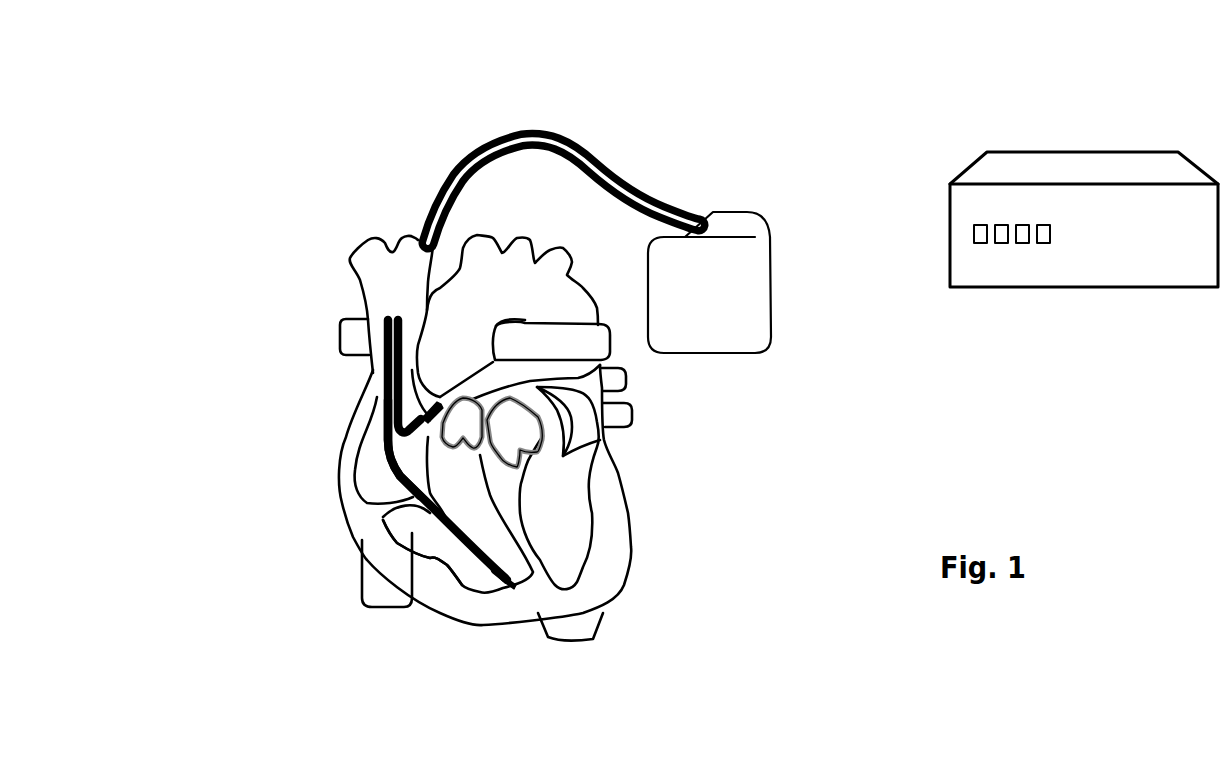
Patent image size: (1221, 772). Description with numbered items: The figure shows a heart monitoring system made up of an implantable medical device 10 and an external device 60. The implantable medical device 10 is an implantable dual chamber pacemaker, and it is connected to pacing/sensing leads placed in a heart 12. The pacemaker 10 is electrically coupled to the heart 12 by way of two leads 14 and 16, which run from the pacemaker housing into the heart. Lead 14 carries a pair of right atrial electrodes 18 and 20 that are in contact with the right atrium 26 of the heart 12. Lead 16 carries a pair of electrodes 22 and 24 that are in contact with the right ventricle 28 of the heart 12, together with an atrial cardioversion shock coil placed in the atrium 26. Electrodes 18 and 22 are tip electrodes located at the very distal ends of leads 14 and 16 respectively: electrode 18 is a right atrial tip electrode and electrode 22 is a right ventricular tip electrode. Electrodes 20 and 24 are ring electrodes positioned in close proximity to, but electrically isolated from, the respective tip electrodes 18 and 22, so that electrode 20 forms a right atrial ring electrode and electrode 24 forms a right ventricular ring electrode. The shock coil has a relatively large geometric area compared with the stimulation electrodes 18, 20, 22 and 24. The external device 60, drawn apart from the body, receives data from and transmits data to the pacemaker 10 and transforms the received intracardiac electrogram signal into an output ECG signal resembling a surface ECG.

The implantable medical device 10 is at (798, 305).
The heart 12 is at (288, 530).
The lead 14 is at (600, 193).
The lead 16 is at (577, 152).
The right atrial tip electrode 18 is at (437, 405).
The right atrial ring electrode 20 is at (427, 415).
The right ventricular tip electrode 22 is at (512, 585).
The right ventricular ring electrode 24 is at (502, 580).
The right atrium 26 is at (373, 469).
The right ventricle 28 is at (433, 553).
The external device 60 is at (1112, 325).